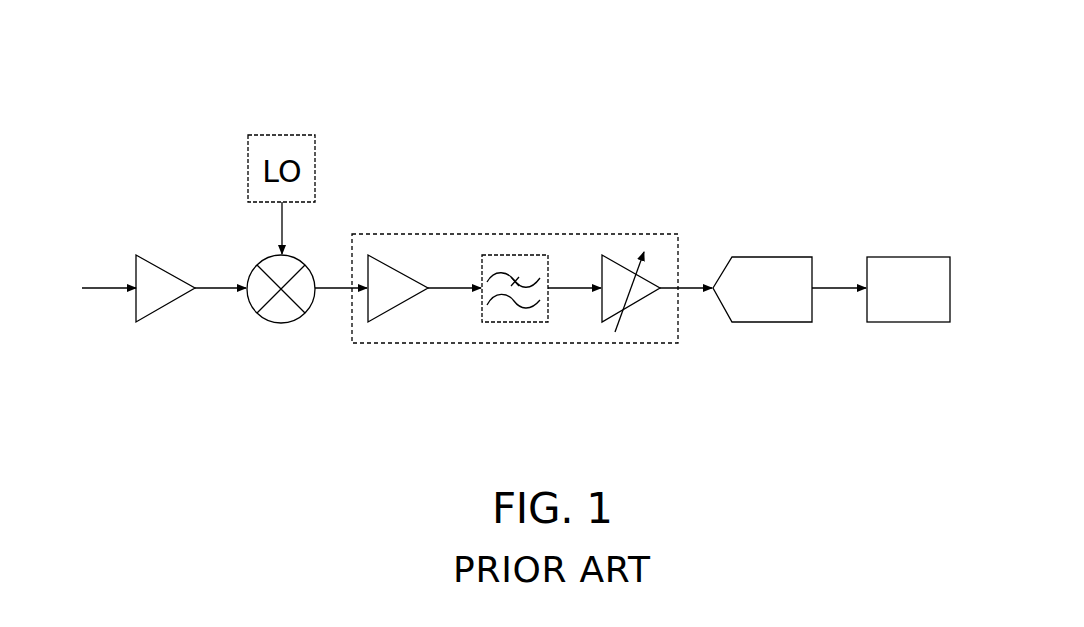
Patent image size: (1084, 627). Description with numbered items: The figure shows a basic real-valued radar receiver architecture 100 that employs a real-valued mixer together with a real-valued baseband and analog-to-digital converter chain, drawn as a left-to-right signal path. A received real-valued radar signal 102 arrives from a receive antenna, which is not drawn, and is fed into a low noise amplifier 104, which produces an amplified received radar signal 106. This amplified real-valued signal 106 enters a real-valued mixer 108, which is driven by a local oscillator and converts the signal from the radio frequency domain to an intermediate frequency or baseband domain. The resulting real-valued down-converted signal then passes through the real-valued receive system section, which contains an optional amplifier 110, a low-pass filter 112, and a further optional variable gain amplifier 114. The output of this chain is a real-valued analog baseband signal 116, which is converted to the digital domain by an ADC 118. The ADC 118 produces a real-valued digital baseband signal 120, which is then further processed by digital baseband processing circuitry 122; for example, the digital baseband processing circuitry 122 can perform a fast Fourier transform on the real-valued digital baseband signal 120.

The radar receiver architecture 100 is at (696, 92).
The received radar signal 102 is at (100, 291).
The low noise amplifier 104 is at (160, 309).
The amplified received radar signal 106 is at (200, 286).
The real-valued mixer 108 is at (287, 334).
The amplifier 110 is at (388, 313).
The low-pass filter 112 is at (515, 323).
The variable gain amplifier 114 is at (635, 306).
The analog baseband signal 116 is at (698, 284).
The ADC 118 is at (757, 323).
The digital baseband signal 120 is at (834, 285).
The digital baseband processing circuitry 122 is at (910, 323).